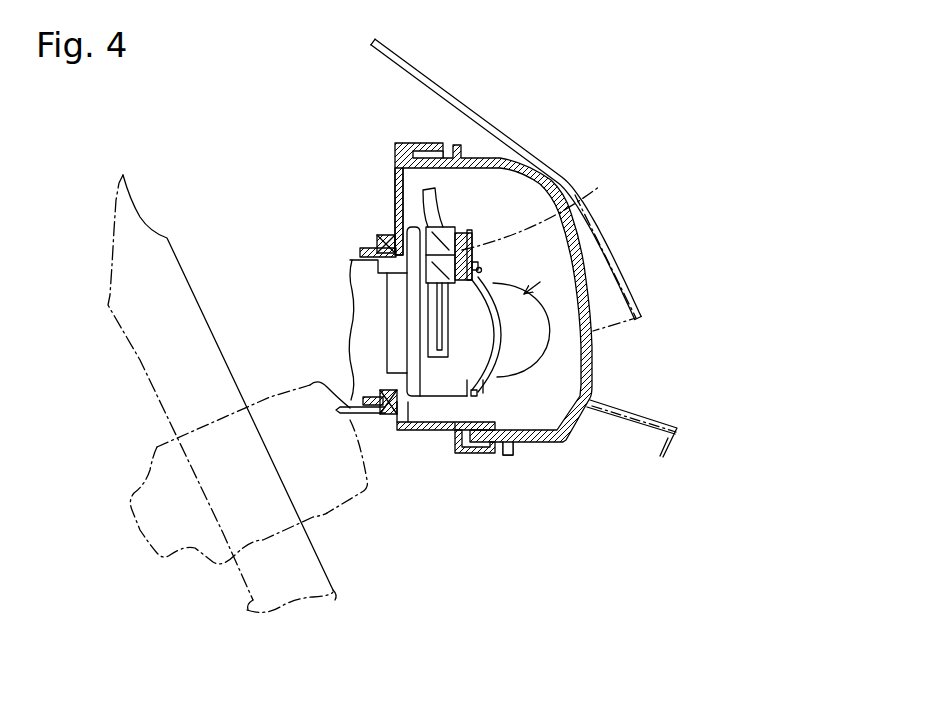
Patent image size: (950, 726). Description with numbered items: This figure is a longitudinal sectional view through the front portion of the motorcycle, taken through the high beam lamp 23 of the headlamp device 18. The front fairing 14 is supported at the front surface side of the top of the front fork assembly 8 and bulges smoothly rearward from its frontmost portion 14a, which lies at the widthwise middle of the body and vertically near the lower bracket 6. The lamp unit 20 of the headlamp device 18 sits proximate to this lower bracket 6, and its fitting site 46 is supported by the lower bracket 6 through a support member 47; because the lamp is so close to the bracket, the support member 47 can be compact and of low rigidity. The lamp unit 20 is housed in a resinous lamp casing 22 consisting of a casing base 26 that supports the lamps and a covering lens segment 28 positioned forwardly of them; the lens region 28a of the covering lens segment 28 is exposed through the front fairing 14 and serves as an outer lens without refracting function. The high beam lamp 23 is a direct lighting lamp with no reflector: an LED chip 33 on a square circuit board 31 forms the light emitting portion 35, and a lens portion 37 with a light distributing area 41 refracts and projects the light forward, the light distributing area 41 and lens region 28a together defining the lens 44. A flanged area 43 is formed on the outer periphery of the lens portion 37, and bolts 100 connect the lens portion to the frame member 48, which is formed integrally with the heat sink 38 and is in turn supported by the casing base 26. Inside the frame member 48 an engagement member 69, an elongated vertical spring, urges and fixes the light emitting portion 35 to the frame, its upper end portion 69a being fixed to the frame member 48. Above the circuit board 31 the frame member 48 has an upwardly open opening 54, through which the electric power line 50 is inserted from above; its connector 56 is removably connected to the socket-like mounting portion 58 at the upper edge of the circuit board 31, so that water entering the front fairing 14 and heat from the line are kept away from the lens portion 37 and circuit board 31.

The lower bracket 6 is at (165, 563).
The front fork assembly 8 is at (140, 357).
The front fairing 14 is at (426, 71).
The frontmost portion 14a is at (687, 433).
The headlamp device 18 is at (525, 448).
The lamp unit 20 is at (473, 148).
The lamp casing 22 is at (508, 448).
The high beam lamp 23 is at (550, 297).
The casing base 26 is at (476, 455).
The covering lens segment 28 is at (578, 425).
The lens region 28a is at (592, 367).
The circuit board 31 is at (432, 284).
The LED chip 33 is at (430, 320).
The light emitting portion 35 is at (296, 252).
The lens portion 37 is at (697, 250).
The heat sink 38 is at (353, 259).
The light distributing area 41 is at (527, 317).
The flanged area 43 is at (497, 343).
The lens 44 is at (664, 447).
The fitting site 46 is at (380, 422).
The support member 47 is at (360, 415).
The frame member 48 is at (403, 357).
The electric power line 50 is at (435, 200).
The opening 54 is at (462, 218).
The connector 56 is at (460, 228).
The mounting portion 58 is at (395, 240).
The engagement member 69 is at (430, 340).
The upper end portion 69a is at (552, 214).
The bolt 100 is at (481, 270).